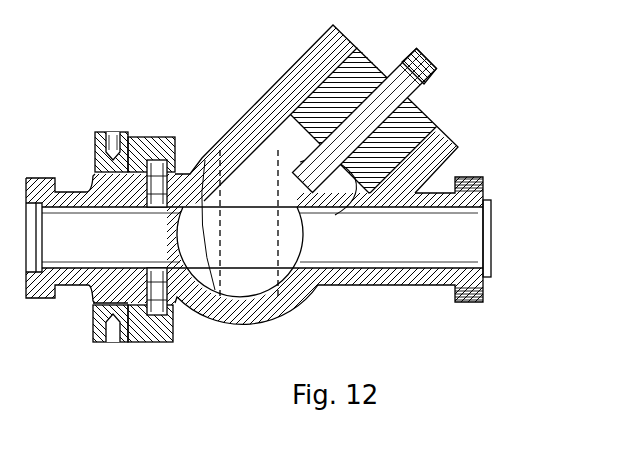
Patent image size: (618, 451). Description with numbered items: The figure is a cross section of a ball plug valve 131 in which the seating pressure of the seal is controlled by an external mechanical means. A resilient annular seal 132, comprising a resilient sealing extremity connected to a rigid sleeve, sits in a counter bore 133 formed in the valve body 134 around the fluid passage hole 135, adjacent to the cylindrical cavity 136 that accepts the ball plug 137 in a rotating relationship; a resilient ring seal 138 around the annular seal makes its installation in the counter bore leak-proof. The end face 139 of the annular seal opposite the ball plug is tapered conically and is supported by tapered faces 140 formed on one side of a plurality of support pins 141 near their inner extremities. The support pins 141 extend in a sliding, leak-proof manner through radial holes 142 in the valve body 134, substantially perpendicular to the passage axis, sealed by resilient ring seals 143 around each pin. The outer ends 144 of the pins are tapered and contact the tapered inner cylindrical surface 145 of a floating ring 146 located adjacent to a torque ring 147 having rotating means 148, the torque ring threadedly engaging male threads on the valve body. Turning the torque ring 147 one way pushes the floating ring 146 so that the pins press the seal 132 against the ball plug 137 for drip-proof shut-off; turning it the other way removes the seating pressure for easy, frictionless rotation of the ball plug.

The ball plug valve 131 is at (240, 318).
The resilient annular seal 132 is at (248, 322).
The counter bore 133 is at (232, 292).
The valve body 134 is at (312, 290).
The fluid passage hole 135 is at (67, 232).
The cylindrical cavity 136 is at (307, 205).
The ball plug 137 is at (403, 265).
The resilient ring seal 138 is at (184, 315).
The end face 139 is at (92, 303).
The tapered faces 140 is at (205, 185).
The support pins 141 is at (133, 343).
The holes 142 is at (92, 292).
The resilient ring seals 143 is at (88, 306).
The outer ends 144 is at (157, 160).
The tapered inner cylindrical surface 145 is at (80, 190).
The floating ring 146 is at (146, 137).
The torque ring 147 is at (113, 132).
The rotating means 148 is at (118, 133).